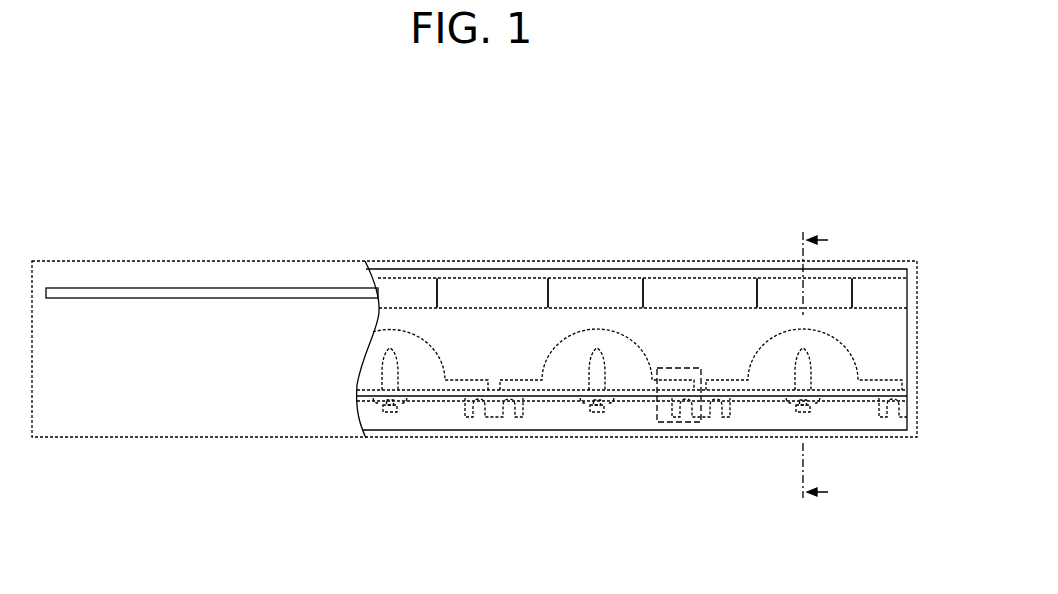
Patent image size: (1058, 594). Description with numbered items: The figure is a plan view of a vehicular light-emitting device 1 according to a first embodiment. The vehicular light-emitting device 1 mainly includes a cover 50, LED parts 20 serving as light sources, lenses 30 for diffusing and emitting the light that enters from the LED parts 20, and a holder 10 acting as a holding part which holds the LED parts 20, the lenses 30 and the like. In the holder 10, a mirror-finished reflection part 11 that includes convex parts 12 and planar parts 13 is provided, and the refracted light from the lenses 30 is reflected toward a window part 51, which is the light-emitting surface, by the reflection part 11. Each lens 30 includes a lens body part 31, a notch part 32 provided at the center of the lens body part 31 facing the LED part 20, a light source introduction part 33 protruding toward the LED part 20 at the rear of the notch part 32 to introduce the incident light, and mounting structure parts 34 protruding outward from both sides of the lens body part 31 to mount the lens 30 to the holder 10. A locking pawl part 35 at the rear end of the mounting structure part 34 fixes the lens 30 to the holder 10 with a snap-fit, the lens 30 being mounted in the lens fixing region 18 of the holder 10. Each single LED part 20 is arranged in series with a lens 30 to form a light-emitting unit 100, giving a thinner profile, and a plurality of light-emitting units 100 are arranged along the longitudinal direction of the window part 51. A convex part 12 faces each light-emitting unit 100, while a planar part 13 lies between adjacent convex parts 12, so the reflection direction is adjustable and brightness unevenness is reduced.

The vehicular light-emitting device 1 is at (145, 140).
The holder 10 is at (887, 355).
The reflection part 11 is at (380, 205).
The convex part 12 is at (400, 294).
The planar part 13 is at (494, 294).
The lens fixing region 18 is at (861, 397).
The LED part 20 is at (392, 413).
The lens 30 is at (660, 480).
The lens body part 31 is at (630, 377).
The notch part 32 is at (601, 373).
The light source introduction part 33 is at (583, 407).
The mounting structure part 34 is at (682, 421).
The locking pawl part 35 is at (492, 403).
The cover 50 is at (208, 277).
The window part 51 is at (123, 295).
The light-emitting unit 100 is at (367, 480).